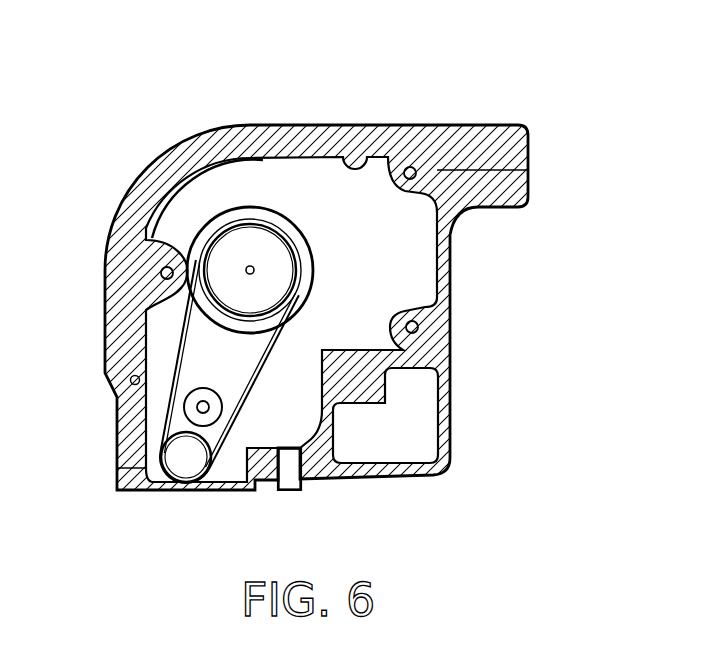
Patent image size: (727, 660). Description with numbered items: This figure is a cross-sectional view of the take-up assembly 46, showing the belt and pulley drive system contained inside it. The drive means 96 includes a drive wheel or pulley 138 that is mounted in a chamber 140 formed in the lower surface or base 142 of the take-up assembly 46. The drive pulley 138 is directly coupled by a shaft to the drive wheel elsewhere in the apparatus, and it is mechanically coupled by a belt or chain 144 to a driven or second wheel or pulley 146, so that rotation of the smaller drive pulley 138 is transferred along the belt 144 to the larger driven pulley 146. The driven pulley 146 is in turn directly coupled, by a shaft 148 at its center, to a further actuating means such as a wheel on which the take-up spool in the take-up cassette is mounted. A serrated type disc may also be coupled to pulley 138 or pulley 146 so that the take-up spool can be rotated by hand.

The take-up assembly 46 is at (486, 299).
The drive means 96 is at (320, 249).
The drive wheel or pulley 138 is at (183, 461).
The chamber 140 is at (392, 127).
The lower surface or base 142 is at (373, 301).
The belt or chain 144 is at (276, 448).
The driven or second wheel or pulley 146 is at (255, 247).
The shaft 148 is at (247, 268).